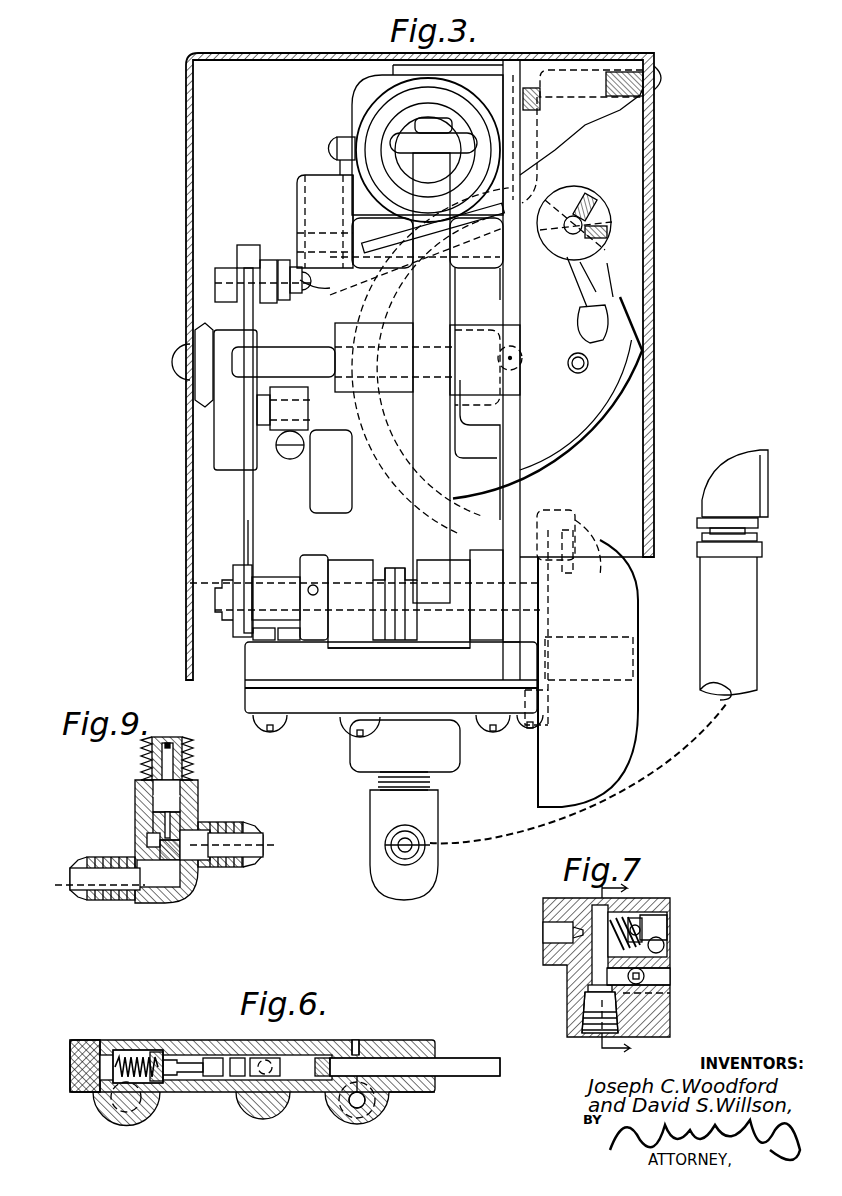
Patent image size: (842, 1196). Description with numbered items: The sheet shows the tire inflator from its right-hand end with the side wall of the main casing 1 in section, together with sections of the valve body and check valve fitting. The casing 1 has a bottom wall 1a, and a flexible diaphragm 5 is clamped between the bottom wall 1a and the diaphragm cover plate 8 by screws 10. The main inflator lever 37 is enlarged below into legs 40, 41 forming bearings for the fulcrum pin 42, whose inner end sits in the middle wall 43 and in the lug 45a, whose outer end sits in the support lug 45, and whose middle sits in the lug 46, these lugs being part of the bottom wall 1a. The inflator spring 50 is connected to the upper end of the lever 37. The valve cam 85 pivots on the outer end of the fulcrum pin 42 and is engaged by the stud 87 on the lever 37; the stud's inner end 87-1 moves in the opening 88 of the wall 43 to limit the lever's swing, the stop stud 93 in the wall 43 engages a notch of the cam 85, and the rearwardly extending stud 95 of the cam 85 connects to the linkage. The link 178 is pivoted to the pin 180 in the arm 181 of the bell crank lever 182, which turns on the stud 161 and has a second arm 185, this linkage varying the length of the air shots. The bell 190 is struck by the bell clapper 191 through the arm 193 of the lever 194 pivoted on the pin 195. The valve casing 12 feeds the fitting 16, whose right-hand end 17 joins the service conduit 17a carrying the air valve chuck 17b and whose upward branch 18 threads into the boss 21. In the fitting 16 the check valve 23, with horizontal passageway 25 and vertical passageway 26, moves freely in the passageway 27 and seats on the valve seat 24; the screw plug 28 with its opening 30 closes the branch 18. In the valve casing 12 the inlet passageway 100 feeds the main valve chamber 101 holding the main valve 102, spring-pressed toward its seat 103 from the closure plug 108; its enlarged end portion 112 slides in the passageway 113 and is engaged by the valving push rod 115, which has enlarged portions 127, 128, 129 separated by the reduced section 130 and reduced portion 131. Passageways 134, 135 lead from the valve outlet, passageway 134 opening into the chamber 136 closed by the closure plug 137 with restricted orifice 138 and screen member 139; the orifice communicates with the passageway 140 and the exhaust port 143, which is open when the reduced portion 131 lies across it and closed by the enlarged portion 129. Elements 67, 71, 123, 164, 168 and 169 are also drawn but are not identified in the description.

In FIG. 3, the main casing 1 is at (186, 212).
In FIG. 3, the bottom wall 1a is at (535, 660).
In FIG. 3, the flexible diaphragm 5 is at (433, 688).
In FIG. 3, the diaphragm cover plate 8 is at (540, 705).
In FIG. 7, the diaphragm cover plate 8 is at (624, 968).
In FIG. 3, the screws 10 is at (270, 728).
In FIG. 3, the valve casing 12 is at (225, 402).
In FIG. 6, the valve casing 12 is at (405, 1045).
In FIG. 3, the fitting 16 is at (415, 898).
In FIG. 9, the fitting 16 is at (178, 898).
In FIG. 3, the right-hand end of fitting 17 is at (386, 845).
In FIG. 9, the right-hand end of fitting 17 is at (236, 833).
In FIG. 3, the fluid service conduit 17a is at (745, 621).
In FIG. 3, the air valve chuck 17b is at (758, 486).
In FIG. 3, the upward extending branch 18 is at (378, 797).
In FIG. 9, the upward extending branch 18 is at (198, 790).
In FIG. 3, the boss 21 is at (405, 746).
In FIG. 9, the check valve 23 is at (157, 823).
In FIG. 9, the valve seat 24 is at (150, 877).
In FIG. 9, the horizontal passageway 25 is at (175, 845).
In FIG. 9, the vertical passageway 26 is at (167, 813).
In FIG. 9, the passageway 27 is at (175, 796).
In FIG. 9, the screw plug 28 is at (190, 745).
In FIG. 9, the opening 30 is at (172, 762).
In FIG. 3, the main inflator lever 37 is at (431, 378).
In FIG. 3, the leg 40 is at (350, 560).
In FIG. 3, the leg 41 is at (410, 568).
In FIG. 3, the fulcrum pin 42 is at (214, 598).
In FIG. 3, the wall 43 is at (520, 428).
In FIG. 3, the support lug 45 is at (310, 560).
In FIG. 3, the lug 45a is at (548, 535).
In FIG. 3, the lug 46 is at (408, 622).
In FIG. 3, the inflator spring 50 is at (388, 110).
In FIG. 3, the pivot 67 is at (514, 352).
In FIG. 3, the arm 71 is at (350, 323).
In FIG. 3, the valve cam 85 is at (246, 546).
In FIG. 3, the stud 87 is at (198, 352).
In FIG. 3, the inner end of stud 87-1 is at (520, 380).
In FIG. 3, the opening 88 is at (470, 405).
In FIG. 3, the stop stud 93 is at (282, 462).
In FIG. 3, the rearwardly extending stud 95 is at (258, 410).
In FIG. 6, the inlet passageway 100 is at (130, 1108).
In FIG. 6, the main valve chamber 101 is at (130, 1052).
In FIG. 6, the main valve 102 is at (158, 1052).
In FIG. 6, the seat 103 is at (150, 1085).
In FIG. 6, the closure plug 108 is at (75, 1065).
In FIG. 6, the enlarged end portion 112 is at (215, 1058).
In FIG. 6, the passageway 113 is at (236, 1080).
In FIG. 6, the valving push rod 115 is at (472, 1078).
In FIG. 3, the pin 123 is at (262, 417).
In FIG. 6, the enlarged portion 127 is at (255, 1080).
In FIG. 7, the enlarged portion 128 is at (640, 984).
In FIG. 6, the enlarged portion 128 is at (305, 1078).
In FIG. 6, the enlarged portion 129 is at (390, 1094).
In FIG. 6, the reduced section 130 is at (290, 1105).
In FIG. 7, the reduced portion 131 is at (652, 962).
In FIG. 6, the reduced portion 131 is at (380, 1100).
In FIG. 7, the passageway 134 is at (662, 942).
In FIG. 6, the passageway 135 is at (270, 1085).
In FIG. 7, the chamber 136 is at (645, 935).
In FIG. 7, the closure plug 137 is at (640, 903).
In FIG. 7, the restricted orifice 138 is at (588, 930).
In FIG. 7, the screen member 139 is at (662, 918).
In FIG. 7, the passageway 140 is at (575, 958).
In FIG. 6, the passageway 140 is at (355, 1125).
In FIG. 7, the exhaust port 143 is at (646, 976).
In FIG. 6, the exhaust port 143 is at (358, 1045).
In FIG. 3, the stud 161 is at (327, 252).
In FIG. 3, the block 164 is at (248, 245).
In FIG. 3, the bolt 168 is at (237, 263).
In FIG. 3, the nut 169 is at (215, 288).
In FIG. 3, the link 178 is at (345, 140).
In FIG. 3, the pin 180 is at (335, 160).
In FIG. 3, the arm 181 is at (368, 220).
In FIG. 3, the bell crank lever 182 is at (300, 209).
In FIG. 3, the arm 185 is at (330, 292).
In FIG. 3, the bell 190 is at (634, 748).
In FIG. 3, the bell clapper 191 is at (573, 572).
In FIG. 3, the arm 193 is at (262, 603).
In FIG. 3, the lever 194 is at (395, 603).
In FIG. 3, the pin 195 is at (311, 595).